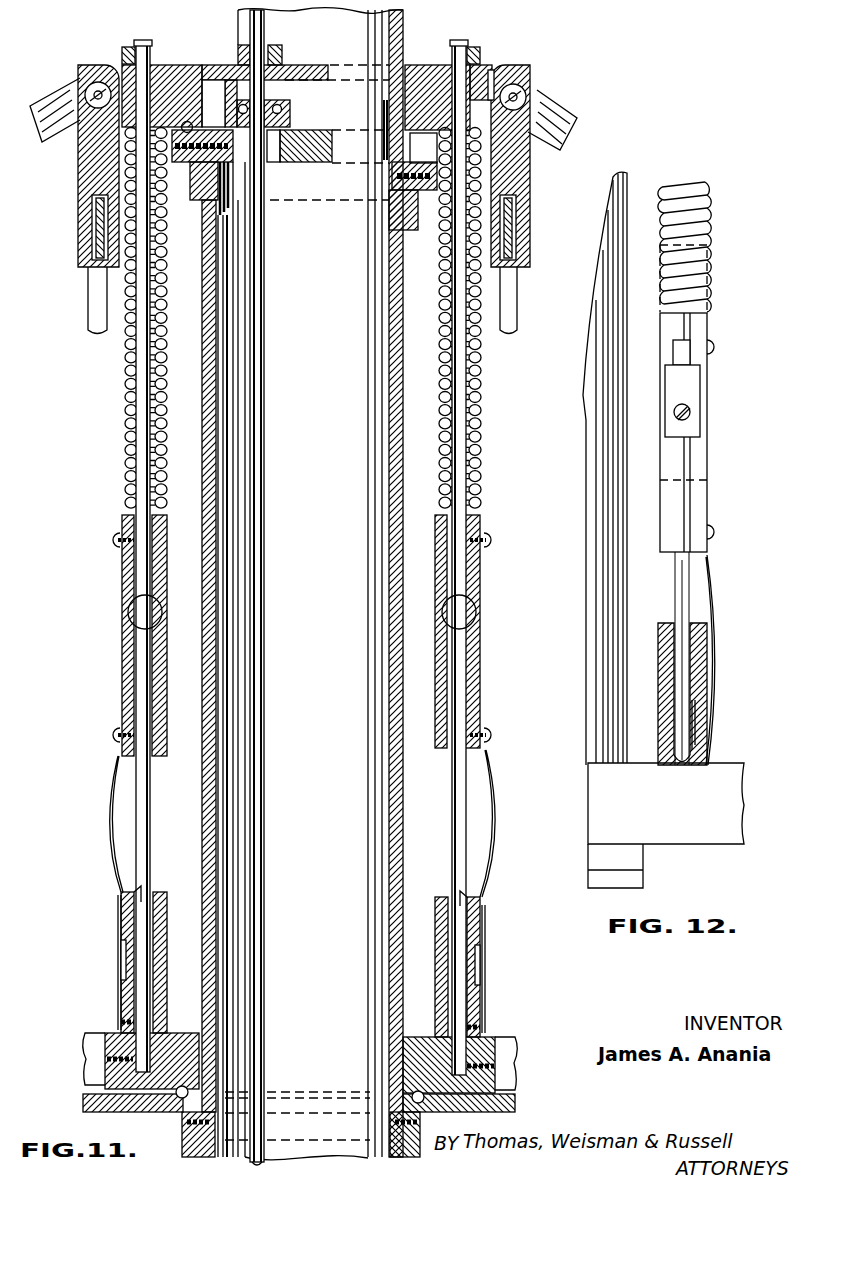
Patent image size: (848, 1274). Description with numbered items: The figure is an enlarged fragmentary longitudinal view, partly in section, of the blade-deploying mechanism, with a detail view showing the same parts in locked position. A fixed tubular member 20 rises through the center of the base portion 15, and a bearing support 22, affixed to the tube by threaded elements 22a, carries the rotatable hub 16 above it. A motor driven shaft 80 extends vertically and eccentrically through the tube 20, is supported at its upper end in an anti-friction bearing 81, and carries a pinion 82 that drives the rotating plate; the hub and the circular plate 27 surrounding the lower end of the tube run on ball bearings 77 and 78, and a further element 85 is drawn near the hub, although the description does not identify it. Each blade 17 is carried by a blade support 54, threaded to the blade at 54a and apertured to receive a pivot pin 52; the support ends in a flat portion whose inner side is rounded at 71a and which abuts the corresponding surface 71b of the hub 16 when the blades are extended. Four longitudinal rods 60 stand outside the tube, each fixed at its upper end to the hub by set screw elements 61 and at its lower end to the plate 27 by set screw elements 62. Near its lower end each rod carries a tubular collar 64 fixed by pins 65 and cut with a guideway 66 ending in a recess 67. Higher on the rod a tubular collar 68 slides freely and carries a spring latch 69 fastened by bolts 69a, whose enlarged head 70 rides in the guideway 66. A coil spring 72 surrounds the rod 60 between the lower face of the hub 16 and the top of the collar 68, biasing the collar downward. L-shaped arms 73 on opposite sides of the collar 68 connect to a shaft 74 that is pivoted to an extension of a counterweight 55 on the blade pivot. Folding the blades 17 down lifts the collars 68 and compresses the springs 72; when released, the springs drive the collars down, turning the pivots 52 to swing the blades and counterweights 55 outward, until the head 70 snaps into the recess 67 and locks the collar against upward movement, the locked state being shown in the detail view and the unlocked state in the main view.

In FIG. 11, the base portion 15 is at (504, 1038).
In FIG. 11, the rotatable hub 16 is at (176, 64).
In FIG. 11, the blade 17 is at (90, 311).
In FIG. 11, the tubular member 20 is at (389, 675).
In FIG. 12, the tubular member 20 is at (612, 576).
In FIG. 11, the bearing support 22 is at (190, 160).
In FIG. 11, the threaded elements 22a is at (384, 122).
In FIG. 11, the circular plate 27 is at (170, 1040).
In FIG. 12, the circular plate 27 is at (720, 778).
In FIG. 11, the pivot pin 52 is at (94, 82).
In FIG. 11, the blade support 54 is at (78, 170).
In FIG. 11, the screw threaded engagement 54a is at (92, 236).
In FIG. 11, the counterweight 55 is at (48, 100).
In FIG. 11, the longitudinal rod 60 is at (136, 483).
In FIG. 12, the longitudinal rod 60 is at (696, 208).
In FIG. 11, the set screw element 61 is at (127, 47).
In FIG. 11, the set screw element 62 is at (108, 1057).
In FIG. 11, the tubular collar 64 is at (167, 916).
In FIG. 11, the pin 65 is at (121, 1018).
In FIG. 11, the guideway 66 is at (118, 928).
In FIG. 12, the guideway 66 is at (700, 622).
In FIG. 11, the recess 67 is at (120, 964).
In FIG. 11, the tubular collar 68 is at (122, 655).
In FIG. 12, the tubular collar 68 is at (683, 432).
In FIG. 11, the spring latch 69 is at (140, 622).
In FIG. 12, the spring latch 69 is at (709, 600).
In FIG. 11, the bolt 69a is at (114, 542).
In FIG. 12, the bolt 69a is at (712, 342).
In FIG. 11, the enlarged head 70 is at (148, 892).
In FIG. 12, the enlarged head 70 is at (698, 702).
In FIG. 11, the rounded inner side 71a is at (494, 78).
In FIG. 11, the corresponding surface 71b is at (484, 72).
In FIG. 11, the coil spring 72 is at (126, 413).
In FIG. 12, the coil spring 72 is at (690, 198).
In FIG. 11, the L-shaped arm 73 is at (139, 600).
In FIG. 12, the L-shaped arm 73 is at (690, 422).
In FIG. 12, the shaft 74 is at (690, 352).
In FIG. 11, the ball bearing 77 is at (420, 198).
In FIG. 11, the ball bearing 78 is at (198, 1088).
In FIG. 11, the motor driven shaft 80 is at (264, 468).
In FIG. 11, the anti-friction bearing 81 is at (282, 95).
In FIG. 11, the pinion 82 is at (280, 62).
In FIG. 11, the ball 85 is at (189, 120).